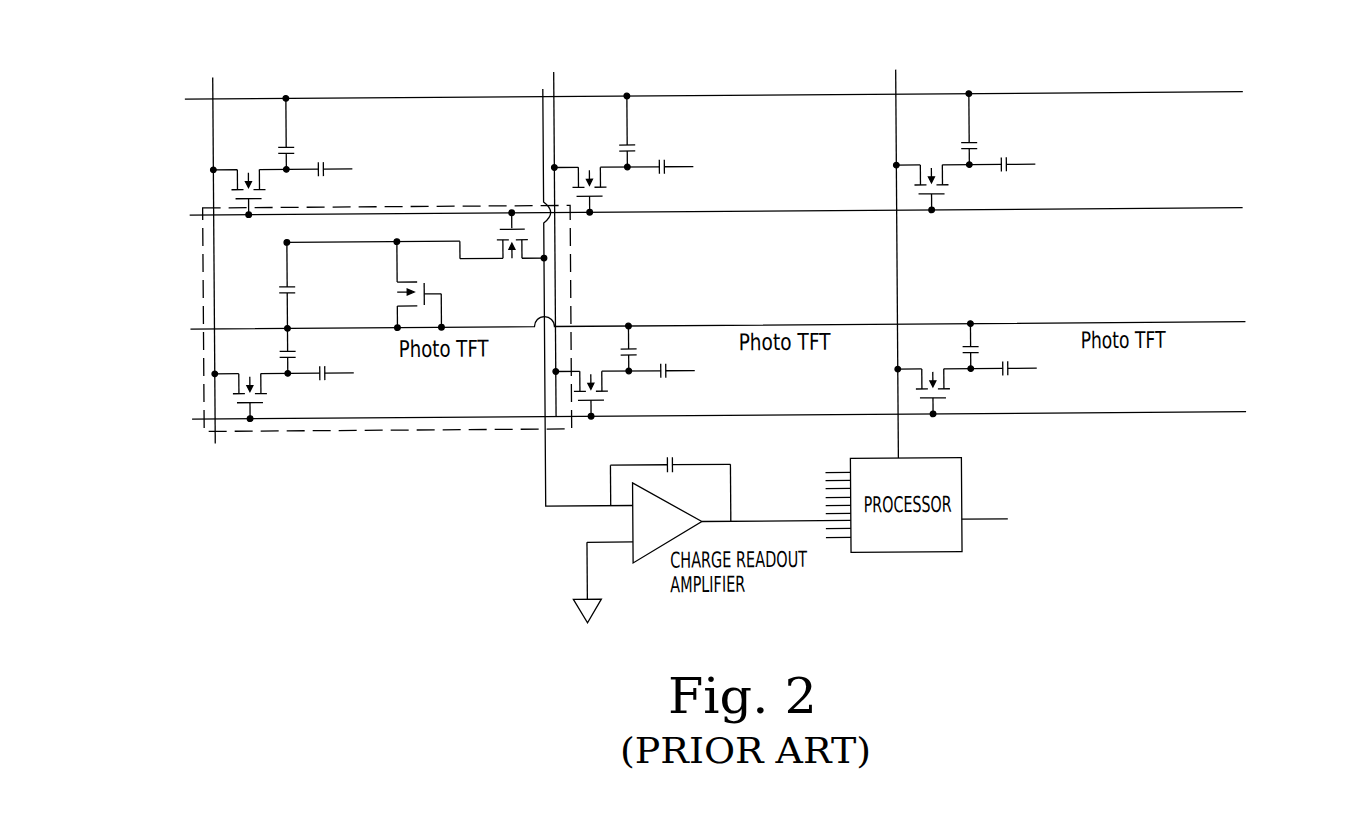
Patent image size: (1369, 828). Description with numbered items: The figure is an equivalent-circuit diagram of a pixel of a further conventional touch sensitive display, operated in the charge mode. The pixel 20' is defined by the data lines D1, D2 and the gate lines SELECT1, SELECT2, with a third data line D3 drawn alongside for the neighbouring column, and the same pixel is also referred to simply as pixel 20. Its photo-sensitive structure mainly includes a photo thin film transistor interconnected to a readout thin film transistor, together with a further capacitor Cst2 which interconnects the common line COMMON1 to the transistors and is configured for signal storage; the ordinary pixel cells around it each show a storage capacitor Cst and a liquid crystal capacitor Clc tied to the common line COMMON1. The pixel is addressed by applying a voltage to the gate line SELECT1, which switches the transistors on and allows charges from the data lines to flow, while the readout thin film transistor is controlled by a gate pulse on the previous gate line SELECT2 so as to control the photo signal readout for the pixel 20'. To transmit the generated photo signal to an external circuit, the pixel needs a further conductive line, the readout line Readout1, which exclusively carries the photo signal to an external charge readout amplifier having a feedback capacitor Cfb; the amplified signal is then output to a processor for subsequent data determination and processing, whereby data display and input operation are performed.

The pixel 20' is at (387, 331).
The pixel unit cell with photo TFT and readout TFT 20 is at (387, 331).
The data line D1 is at (218, 240).
The data line D2 is at (561, 225).
The data line D3 is at (901, 244).
The gate line SELECT1 is at (673, 411).
The previous gate line SELECT2 is at (666, 208).
The common line COMMON1 is at (773, 210).
The readout line Readout1 is at (546, 297).
The storage capacitor Cst is at (613, 234).
The capacitor Cst2 is at (268, 284).
The liquid crystal capacitor Clc is at (677, 254).
The feedback capacitor Cfb is at (670, 476).